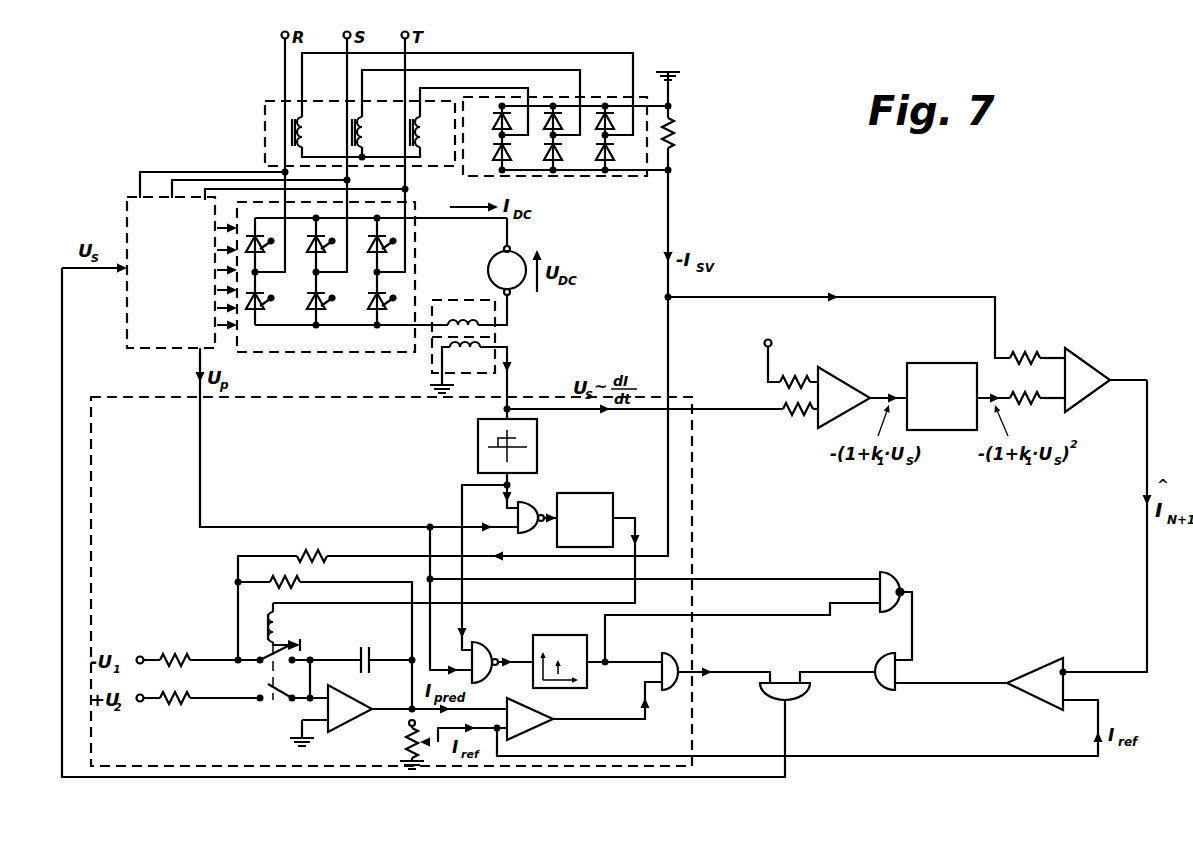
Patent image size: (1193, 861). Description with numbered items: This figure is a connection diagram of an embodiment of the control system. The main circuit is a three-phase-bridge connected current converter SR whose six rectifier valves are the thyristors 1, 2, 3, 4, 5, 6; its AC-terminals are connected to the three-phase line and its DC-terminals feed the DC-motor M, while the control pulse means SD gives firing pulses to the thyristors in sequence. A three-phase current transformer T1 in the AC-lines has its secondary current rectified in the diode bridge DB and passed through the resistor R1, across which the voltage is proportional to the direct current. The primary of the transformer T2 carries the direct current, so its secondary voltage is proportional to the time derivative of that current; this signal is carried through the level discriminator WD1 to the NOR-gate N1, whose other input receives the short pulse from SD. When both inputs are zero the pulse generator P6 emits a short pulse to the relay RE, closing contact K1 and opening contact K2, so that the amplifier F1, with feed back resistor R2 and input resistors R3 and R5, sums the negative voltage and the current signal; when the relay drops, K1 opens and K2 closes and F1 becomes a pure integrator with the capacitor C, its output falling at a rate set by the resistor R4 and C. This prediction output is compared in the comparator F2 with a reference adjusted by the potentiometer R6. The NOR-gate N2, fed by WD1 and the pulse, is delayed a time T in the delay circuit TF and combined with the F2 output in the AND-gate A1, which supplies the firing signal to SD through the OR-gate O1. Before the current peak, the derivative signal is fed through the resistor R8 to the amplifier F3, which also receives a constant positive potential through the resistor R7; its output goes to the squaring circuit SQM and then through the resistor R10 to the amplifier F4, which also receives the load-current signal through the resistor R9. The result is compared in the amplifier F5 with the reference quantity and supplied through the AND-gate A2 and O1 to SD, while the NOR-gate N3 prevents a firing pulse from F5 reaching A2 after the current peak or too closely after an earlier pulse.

The three-phase current transformer T1 is at (446, 165).
The diode bridge DB is at (567, 136).
The resistor R1 is at (515, 314).
The control pulse means SD is at (157, 346).
The three-phase-bridge connected current converter SR is at (372, 277).
The thyristor 1 is at (261, 251).
The thyristor 2 is at (386, 307).
The thyristor 3 is at (322, 251).
The thyristor 4 is at (263, 307).
The thyristor 5 is at (382, 251).
The thyristor 6 is at (324, 307).
The DC-motor M is at (502, 271).
The transformer T2 is at (489, 370).
The level discriminator WD1 is at (507, 447).
The NOR-gate N1 is at (537, 527).
The pulse generator P6 is at (454, 548).
The feed back resistor R2 is at (325, 635).
The resistor R3 is at (282, 595).
The resistor R4 is at (199, 688).
The resistor R5 is at (199, 650).
The potentiometer R6 is at (444, 737).
The relay RE is at (294, 651).
The contact K1 is at (266, 667).
The contact K2 is at (268, 705).
The feed-back capacitor C is at (386, 649).
The amplifier F1 is at (350, 718).
The comparator F2 is at (527, 728).
The NOR-gate N2 is at (502, 651).
The delay circuit TF is at (573, 655).
The AND-gate A1 is at (672, 655).
The OR-gate O1 is at (796, 695).
The NOR-gate N3 is at (893, 581).
The AND-gate A2 is at (891, 692).
The amplifier F5 is at (1037, 684).
The resistor R7 is at (787, 353).
The resistor R8 is at (800, 422).
The amplifier F3 is at (862, 397).
The squaring circuit SQM is at (958, 396).
The resistor R9 is at (1037, 343).
The resistor R10 is at (1037, 410).
The amplifier F4 is at (1106, 380).